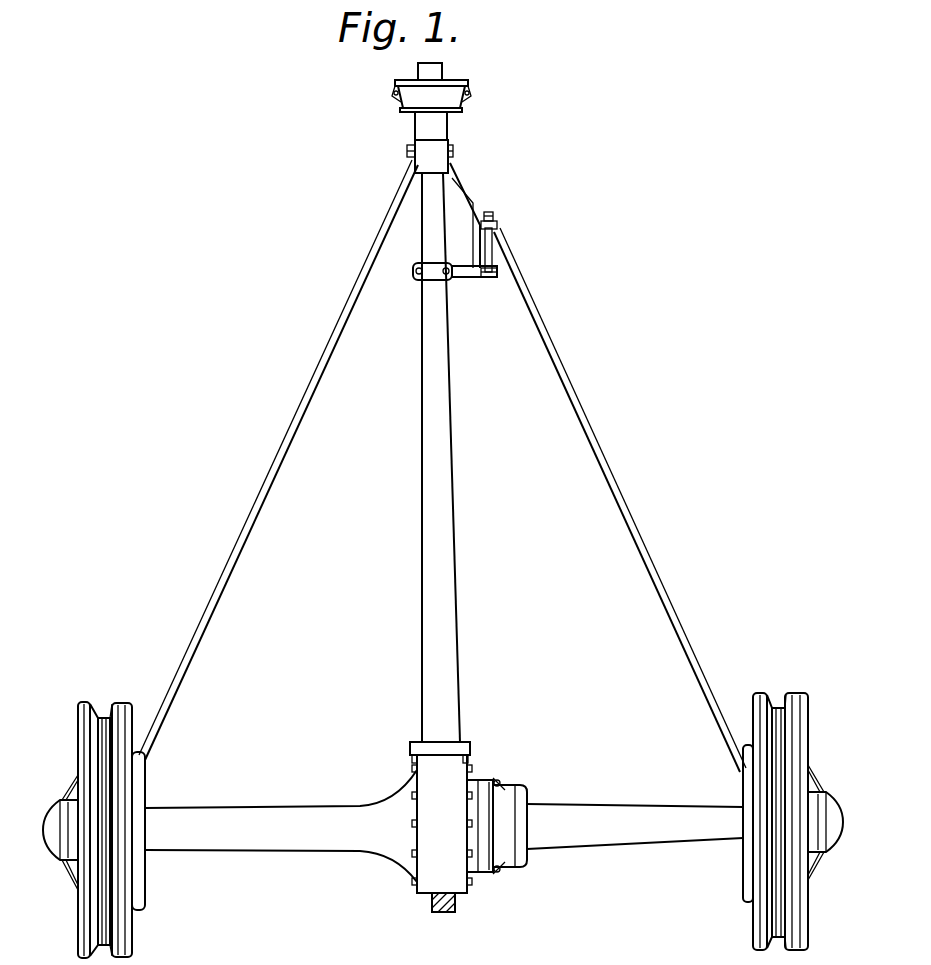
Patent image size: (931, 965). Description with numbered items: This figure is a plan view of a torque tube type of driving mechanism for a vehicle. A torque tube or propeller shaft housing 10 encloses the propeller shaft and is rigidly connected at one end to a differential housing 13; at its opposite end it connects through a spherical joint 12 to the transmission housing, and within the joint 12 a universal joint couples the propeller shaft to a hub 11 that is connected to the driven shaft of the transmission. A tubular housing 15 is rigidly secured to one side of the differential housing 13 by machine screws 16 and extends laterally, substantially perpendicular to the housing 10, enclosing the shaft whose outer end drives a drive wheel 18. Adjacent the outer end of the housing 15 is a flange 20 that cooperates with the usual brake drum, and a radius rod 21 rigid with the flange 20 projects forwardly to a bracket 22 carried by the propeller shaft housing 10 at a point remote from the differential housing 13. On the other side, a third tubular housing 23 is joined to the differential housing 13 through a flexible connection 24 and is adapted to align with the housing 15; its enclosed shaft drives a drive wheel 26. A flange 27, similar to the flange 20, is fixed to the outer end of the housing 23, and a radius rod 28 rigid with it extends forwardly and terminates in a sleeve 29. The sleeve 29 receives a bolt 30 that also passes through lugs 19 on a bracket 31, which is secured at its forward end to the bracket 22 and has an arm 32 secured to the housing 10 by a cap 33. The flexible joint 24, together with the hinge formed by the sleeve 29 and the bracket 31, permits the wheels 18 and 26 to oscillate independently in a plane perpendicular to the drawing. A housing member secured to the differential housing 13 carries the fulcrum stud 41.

The propeller shaft housing 10 is at (447, 527).
The hub 11 is at (428, 73).
The spherical joint 12 is at (445, 95).
The differential housing 13 is at (440, 855).
The tubular housing 15 is at (290, 832).
The machine screws 16 is at (412, 770).
The drive wheel 18 is at (100, 718).
The lugs 19 is at (495, 224).
The flange 20 is at (139, 748).
The radius rod 21 is at (283, 468).
The bracket 22 is at (426, 162).
The third tubular housing 23 is at (637, 829).
The flexible connection 24 is at (504, 800).
The drive wheel 26 is at (775, 706).
The flange 27 is at (743, 786).
The radius rod 28 is at (660, 592).
The sleeve 29 is at (491, 244).
The bolt 30 is at (490, 214).
The bracket 31 is at (466, 198).
The arm 32 is at (474, 274).
The cap 33 is at (425, 272).
The fulcrum stud 41 is at (443, 910).